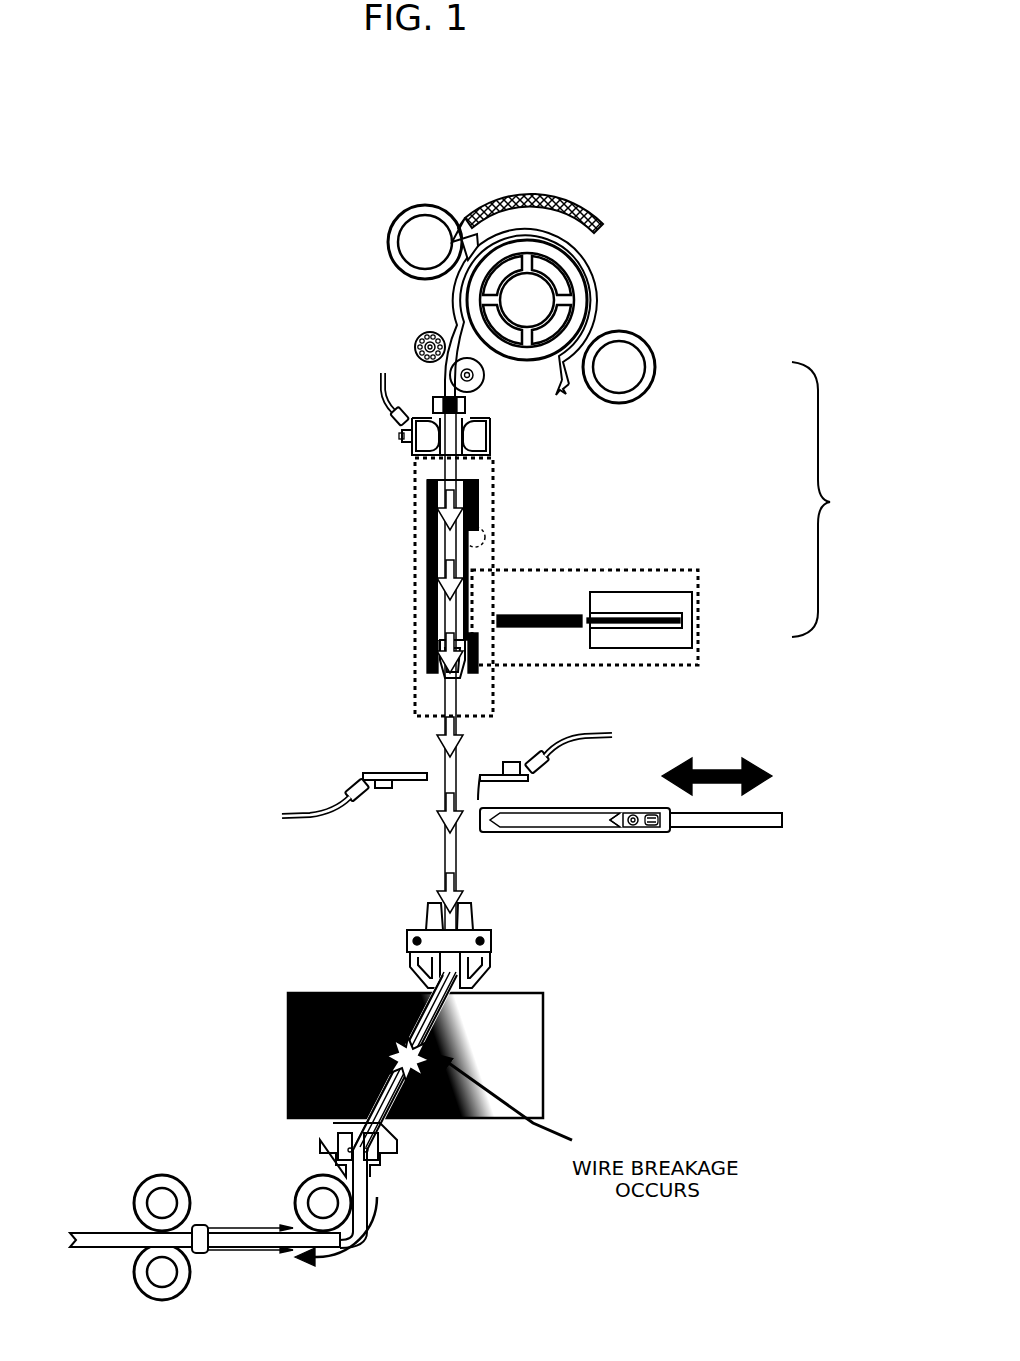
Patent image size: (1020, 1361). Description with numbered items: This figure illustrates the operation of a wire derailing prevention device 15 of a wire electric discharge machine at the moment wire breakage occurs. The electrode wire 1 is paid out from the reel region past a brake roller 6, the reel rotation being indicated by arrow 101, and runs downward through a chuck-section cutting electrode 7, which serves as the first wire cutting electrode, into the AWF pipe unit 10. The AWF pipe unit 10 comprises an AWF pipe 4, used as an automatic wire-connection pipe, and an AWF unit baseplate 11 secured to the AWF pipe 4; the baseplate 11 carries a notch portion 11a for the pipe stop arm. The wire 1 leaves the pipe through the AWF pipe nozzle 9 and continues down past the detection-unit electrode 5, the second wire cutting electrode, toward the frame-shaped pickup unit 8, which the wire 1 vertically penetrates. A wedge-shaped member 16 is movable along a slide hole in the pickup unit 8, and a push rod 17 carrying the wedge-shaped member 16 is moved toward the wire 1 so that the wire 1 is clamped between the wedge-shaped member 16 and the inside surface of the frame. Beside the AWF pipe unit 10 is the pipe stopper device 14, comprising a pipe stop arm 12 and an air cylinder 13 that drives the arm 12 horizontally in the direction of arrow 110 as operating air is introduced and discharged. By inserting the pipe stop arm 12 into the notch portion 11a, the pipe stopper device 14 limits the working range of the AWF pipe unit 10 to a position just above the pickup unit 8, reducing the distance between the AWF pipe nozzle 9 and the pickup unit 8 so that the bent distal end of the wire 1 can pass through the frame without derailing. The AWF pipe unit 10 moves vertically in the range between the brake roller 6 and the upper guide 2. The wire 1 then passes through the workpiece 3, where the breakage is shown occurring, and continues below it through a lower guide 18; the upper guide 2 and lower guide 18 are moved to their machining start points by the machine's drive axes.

The electrode wire 1 is at (443, 768).
The upper guide 2 is at (500, 942).
The workpiece 3 is at (288, 1027).
The AWF pipe 4 is at (430, 525).
The detection-unit electrode 5 is at (393, 797).
The brake roller 6 is at (568, 293).
The chuck-section cutting electrode 7 is at (412, 405).
The pickup unit 8 is at (585, 835).
The AWF pipe nozzle 9 is at (430, 693).
The AWF pipe unit 10 is at (415, 570).
The AWF unit baseplate 11 is at (480, 490).
The notch portion 11a is at (485, 528).
The pipe stop arm 12 is at (540, 607).
The air cylinder 13 is at (620, 600).
The pipe stopper device 14 is at (700, 635).
The derailing prevention device 15 is at (669, 513).
The wedge-shaped member 16 is at (630, 829).
The push rod 17 is at (705, 830).
The lower guide 18 is at (400, 1150).
The rotation direction 101 is at (527, 197).
The arrow 110 is at (722, 758).